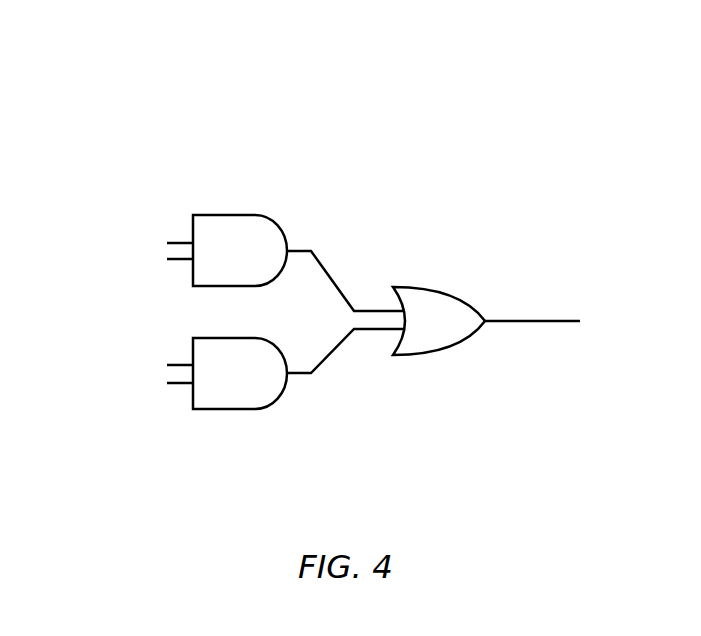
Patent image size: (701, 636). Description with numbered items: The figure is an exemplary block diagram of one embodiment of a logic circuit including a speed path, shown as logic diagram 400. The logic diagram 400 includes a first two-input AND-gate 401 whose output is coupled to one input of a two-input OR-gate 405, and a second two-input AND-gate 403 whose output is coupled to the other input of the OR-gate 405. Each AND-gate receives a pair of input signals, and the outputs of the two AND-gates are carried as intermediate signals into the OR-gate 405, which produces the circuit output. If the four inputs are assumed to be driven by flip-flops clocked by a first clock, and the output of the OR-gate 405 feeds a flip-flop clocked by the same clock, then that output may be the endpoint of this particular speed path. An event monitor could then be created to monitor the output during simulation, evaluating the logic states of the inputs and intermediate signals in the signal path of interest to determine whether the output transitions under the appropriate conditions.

The logic diagram 400 is at (164, 108).
The two-input AND-gate 401 is at (255, 272).
The two-input AND-gate 403 is at (255, 397).
The two-input OR-gate 405 is at (455, 343).